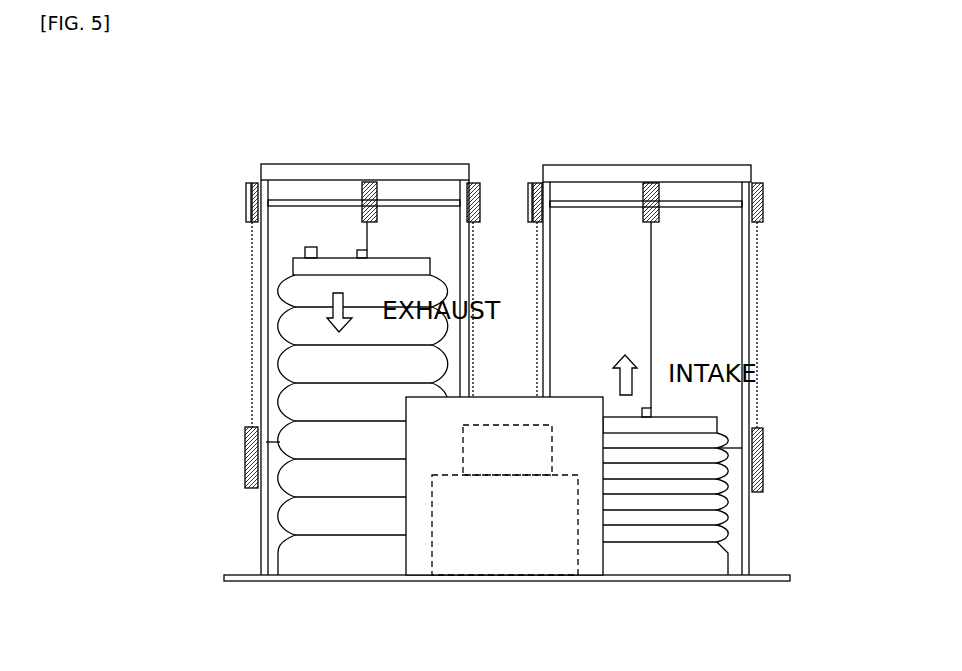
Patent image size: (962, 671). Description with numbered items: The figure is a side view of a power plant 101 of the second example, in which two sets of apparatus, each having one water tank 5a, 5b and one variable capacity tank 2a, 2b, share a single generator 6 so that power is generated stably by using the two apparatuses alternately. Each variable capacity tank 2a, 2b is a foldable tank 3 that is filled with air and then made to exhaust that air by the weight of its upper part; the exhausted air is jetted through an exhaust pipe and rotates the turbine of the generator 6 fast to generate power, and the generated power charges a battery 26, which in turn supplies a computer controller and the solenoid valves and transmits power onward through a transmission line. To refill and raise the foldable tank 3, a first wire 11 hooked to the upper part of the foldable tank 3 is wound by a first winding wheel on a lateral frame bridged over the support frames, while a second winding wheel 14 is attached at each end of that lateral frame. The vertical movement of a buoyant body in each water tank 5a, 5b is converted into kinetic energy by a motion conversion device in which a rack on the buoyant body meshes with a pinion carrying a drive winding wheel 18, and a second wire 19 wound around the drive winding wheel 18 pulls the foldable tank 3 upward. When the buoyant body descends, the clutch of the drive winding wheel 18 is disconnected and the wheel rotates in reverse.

The power plant 101 is at (226, 137).
The second winding wheel 14 is at (246, 203).
The first wire 11 is at (368, 238).
The second wire 19 is at (258, 292).
The variable capacity tank 2a is at (291, 411).
The variable capacity tank 2b is at (730, 496).
The foldable tank 3 is at (496, 411).
The drive winding wheel 18 is at (244, 455).
The water tank 5a is at (278, 532).
The water tank 5b is at (735, 547).
The battery 26 is at (507, 448).
The generator 6 is at (562, 555).